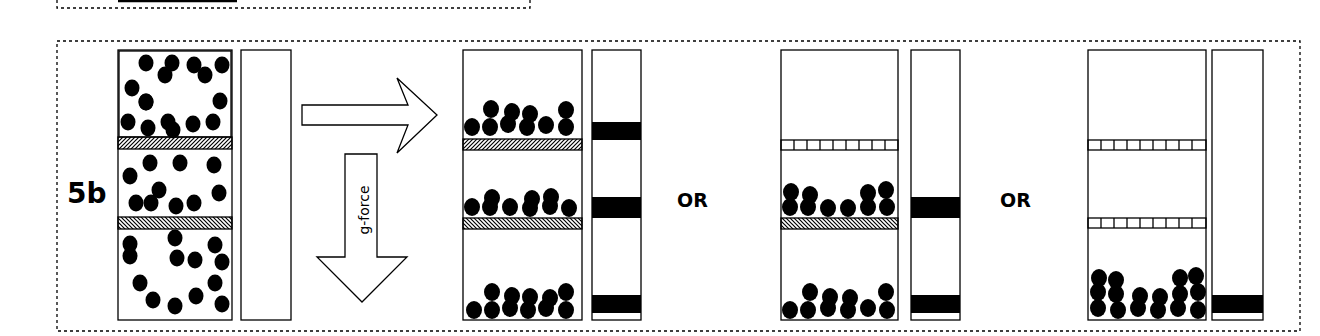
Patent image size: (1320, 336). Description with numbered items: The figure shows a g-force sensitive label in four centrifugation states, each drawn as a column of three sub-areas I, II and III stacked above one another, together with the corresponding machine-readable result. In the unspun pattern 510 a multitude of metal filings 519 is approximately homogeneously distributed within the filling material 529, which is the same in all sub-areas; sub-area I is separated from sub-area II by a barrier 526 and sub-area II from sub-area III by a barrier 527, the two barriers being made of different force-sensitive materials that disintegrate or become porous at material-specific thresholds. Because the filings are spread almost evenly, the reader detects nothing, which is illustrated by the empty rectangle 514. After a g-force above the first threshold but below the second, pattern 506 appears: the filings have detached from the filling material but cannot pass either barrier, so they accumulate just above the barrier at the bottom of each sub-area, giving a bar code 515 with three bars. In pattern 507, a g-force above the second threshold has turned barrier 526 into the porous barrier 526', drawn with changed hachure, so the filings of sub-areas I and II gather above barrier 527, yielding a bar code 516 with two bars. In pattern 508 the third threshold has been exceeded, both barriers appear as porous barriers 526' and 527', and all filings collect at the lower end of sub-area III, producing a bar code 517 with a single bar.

The pattern 506 is at (538, 50).
The pattern 507 is at (852, 50).
The pattern 508 is at (1148, 50).
The pattern 510 is at (195, 50).
The empty rectangle 514 is at (270, 50).
The bar code 515 is at (618, 50).
The bar code 516 is at (940, 50).
The bar code 517 is at (1237, 50).
The metal filings 519 is at (145, 93).
The barrier 526 is at (350, 131).
The barrier 527 is at (508, 216).
The barrier 526' is at (960, 136).
The barrier 527' is at (1115, 234).
The filling material 529 is at (126, 70).